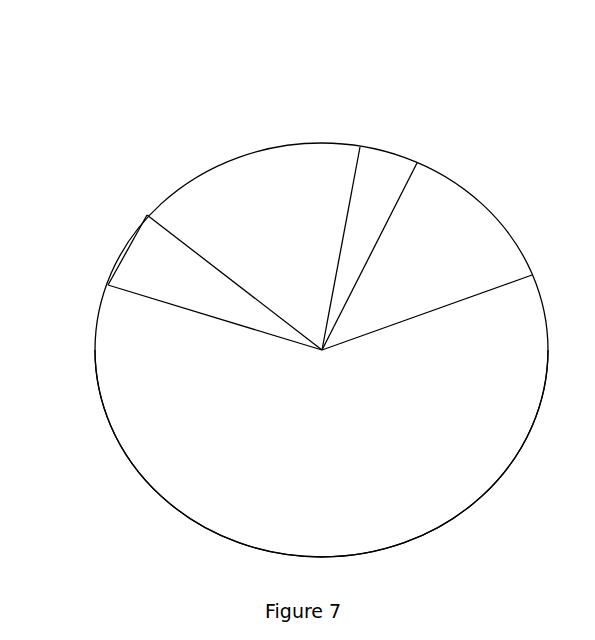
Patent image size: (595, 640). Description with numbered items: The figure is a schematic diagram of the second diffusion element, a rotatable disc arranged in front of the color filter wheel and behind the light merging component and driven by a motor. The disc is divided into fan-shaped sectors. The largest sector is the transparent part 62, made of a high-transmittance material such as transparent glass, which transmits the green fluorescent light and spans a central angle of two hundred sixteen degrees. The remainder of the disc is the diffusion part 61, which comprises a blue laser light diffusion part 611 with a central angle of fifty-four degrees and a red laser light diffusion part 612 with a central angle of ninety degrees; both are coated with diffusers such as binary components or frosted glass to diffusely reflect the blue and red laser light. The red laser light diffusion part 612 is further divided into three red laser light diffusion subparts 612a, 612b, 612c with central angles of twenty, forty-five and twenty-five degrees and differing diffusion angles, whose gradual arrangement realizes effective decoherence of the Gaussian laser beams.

The diffusion part 61 is at (338, 123).
The blue laser light diffusion part 611 is at (468, 227).
The red laser light diffusion part 612 is at (185, 183).
The red laser light diffusion subpart 612a is at (388, 160).
The red laser light diffusion subpart 612b is at (285, 165).
The red laser light diffusion subpart 612c is at (155, 265).
The transparent part 62 is at (143, 460).